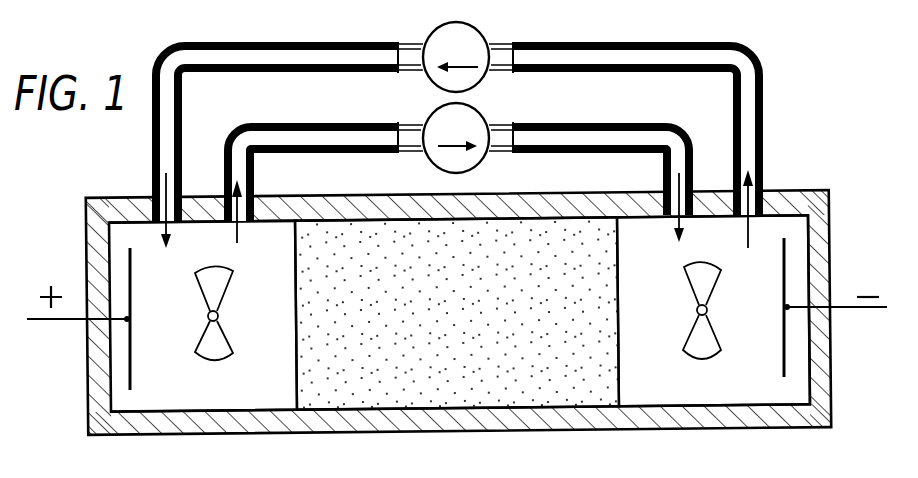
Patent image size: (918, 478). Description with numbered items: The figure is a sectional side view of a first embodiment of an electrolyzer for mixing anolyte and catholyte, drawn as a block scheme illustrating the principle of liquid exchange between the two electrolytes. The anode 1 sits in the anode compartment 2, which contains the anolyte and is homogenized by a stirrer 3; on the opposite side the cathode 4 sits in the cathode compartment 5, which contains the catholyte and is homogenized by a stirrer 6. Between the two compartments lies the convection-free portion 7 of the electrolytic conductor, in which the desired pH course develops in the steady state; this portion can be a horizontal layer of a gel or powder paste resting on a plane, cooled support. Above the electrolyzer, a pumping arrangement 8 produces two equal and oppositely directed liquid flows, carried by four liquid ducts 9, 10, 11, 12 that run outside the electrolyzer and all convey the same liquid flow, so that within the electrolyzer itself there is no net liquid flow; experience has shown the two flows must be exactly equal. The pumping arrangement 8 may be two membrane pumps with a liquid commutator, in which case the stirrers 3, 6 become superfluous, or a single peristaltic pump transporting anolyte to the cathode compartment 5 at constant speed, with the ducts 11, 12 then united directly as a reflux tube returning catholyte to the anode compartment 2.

The anode 1 is at (130, 364).
The anode compartment 2 is at (268, 327).
The stirrer 3 is at (212, 352).
The cathode 4 is at (785, 354).
The cathode compartment 5 is at (753, 341).
The stirrer 6 is at (693, 288).
The convection-free portion of the electrolytic conductor 7 is at (414, 322).
The pumping arrangement 8 is at (480, 30).
The liquid duct 9 is at (312, 139).
The liquid duct 10 is at (617, 131).
The liquid duct 11 is at (300, 56).
The liquid duct 12 is at (640, 52).